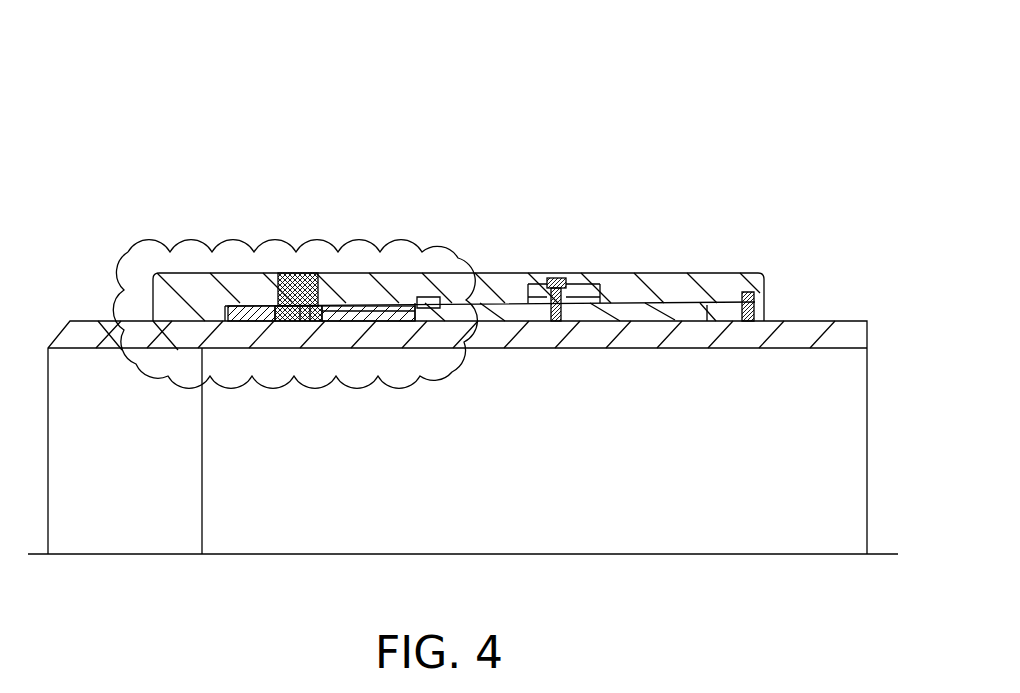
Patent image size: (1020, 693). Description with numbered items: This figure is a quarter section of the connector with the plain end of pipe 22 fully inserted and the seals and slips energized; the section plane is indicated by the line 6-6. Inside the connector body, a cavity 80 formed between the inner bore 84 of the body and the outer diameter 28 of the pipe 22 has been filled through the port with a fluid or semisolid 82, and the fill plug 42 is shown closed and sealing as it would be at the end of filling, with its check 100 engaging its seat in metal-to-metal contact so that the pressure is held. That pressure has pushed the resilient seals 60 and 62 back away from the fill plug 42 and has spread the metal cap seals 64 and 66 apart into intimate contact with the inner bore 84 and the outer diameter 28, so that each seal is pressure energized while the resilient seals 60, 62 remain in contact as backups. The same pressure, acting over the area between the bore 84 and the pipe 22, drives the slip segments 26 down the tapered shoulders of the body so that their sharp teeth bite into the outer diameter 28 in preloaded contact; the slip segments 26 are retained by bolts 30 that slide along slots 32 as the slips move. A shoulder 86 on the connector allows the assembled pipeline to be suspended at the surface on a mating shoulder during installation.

The plain end of pipe 22 is at (797, 320).
The slip segments 26 is at (682, 305).
The outer diameter 28 is at (773, 320).
The bolts 30 is at (566, 300).
The slots 32 is at (556, 285).
The fill plug 42 is at (303, 290).
The resilient seal 60 is at (380, 308).
The resilient seal 62 is at (262, 290).
The metal cap seal 64 is at (347, 312).
The metal cap seal 66 is at (230, 302).
The cavity 80 is at (337, 313).
The fluid or semisolid 82 is at (330, 313).
The inner bore 84 is at (324, 315).
The shoulder 86 is at (140, 293).
The check 100 is at (302, 313).
The section line 6-6 is at (410, 275).